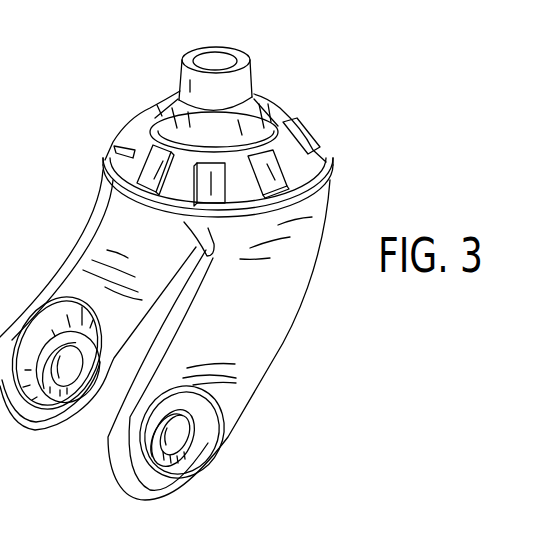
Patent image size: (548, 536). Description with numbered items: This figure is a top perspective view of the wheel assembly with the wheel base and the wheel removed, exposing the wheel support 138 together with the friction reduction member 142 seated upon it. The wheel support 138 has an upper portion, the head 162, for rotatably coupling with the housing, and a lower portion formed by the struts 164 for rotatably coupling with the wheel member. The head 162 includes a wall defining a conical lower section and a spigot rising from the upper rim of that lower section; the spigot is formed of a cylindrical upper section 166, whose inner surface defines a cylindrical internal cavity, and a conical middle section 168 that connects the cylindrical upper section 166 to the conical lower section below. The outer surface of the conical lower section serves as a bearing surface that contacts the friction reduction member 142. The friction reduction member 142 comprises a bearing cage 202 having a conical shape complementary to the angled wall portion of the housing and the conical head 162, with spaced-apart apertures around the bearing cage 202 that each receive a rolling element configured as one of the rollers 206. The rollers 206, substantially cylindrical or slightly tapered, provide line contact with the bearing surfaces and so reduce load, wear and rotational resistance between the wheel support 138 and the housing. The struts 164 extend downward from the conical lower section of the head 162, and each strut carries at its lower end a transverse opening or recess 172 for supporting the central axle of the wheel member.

The wheel support 138 is at (275, 352).
The friction reduction member 142 is at (293, 117).
The head 162 is at (257, 97).
The struts 164 is at (238, 397).
The cylindrical upper section 166 is at (200, 92).
The conical middle section 168 is at (200, 127).
The recess 172 is at (172, 437).
The bearing cage 202 is at (297, 173).
The rollers 206 is at (273, 170).